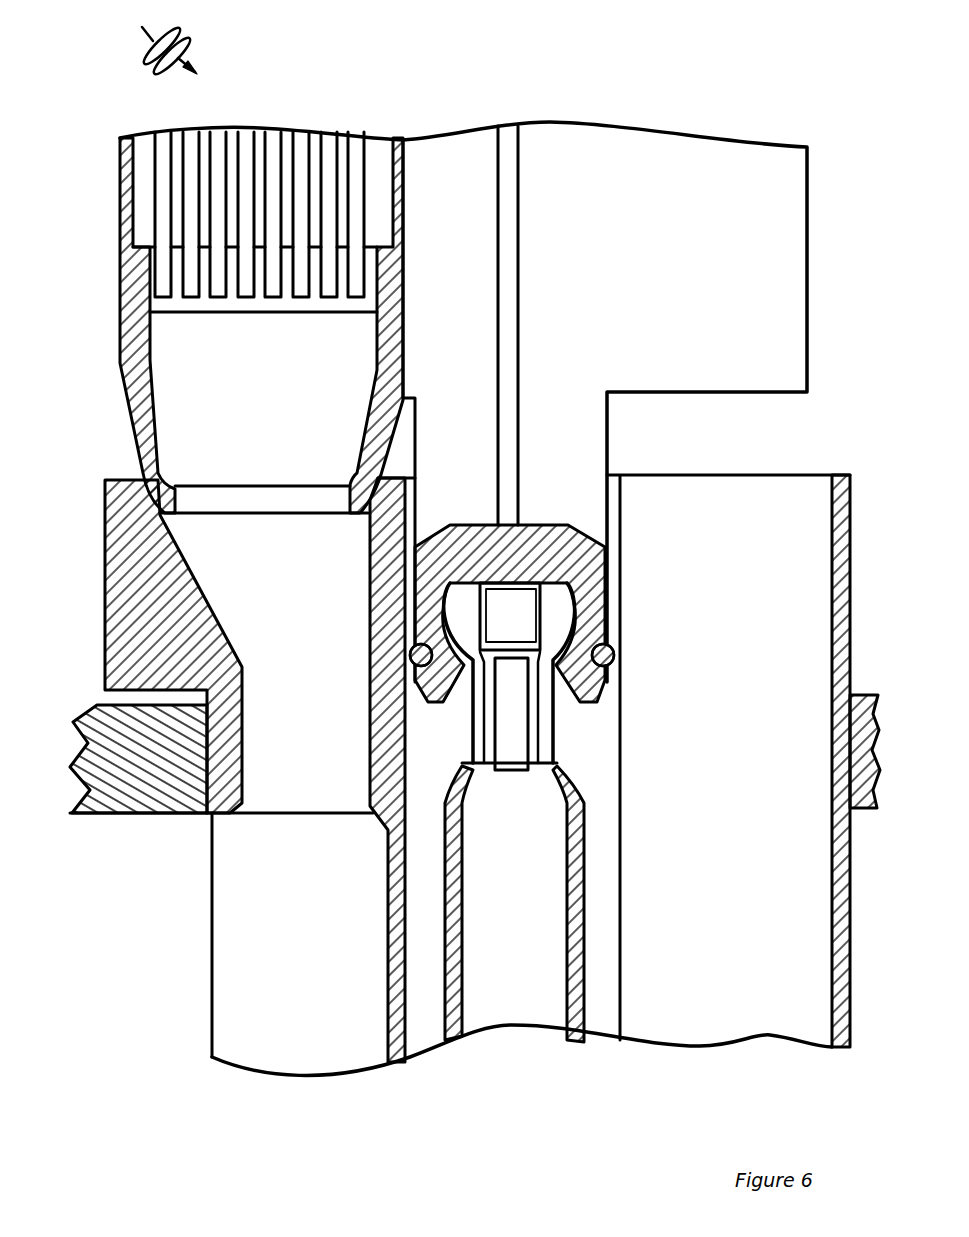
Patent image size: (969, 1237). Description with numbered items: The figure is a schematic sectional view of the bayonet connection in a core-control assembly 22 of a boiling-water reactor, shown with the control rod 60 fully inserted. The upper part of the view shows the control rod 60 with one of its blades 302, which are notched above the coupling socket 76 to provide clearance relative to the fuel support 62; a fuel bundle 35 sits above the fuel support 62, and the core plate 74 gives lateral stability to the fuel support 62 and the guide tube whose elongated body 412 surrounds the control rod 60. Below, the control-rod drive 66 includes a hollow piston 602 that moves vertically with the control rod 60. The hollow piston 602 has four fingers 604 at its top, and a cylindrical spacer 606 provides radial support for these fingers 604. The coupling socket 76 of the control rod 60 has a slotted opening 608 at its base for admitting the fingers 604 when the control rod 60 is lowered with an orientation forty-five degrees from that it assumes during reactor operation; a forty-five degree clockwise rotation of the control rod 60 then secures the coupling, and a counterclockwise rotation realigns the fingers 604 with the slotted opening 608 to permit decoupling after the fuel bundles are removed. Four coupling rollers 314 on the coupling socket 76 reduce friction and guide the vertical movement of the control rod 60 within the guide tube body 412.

The core-control assembly 22 is at (157, 41).
The fuel bundle 35 is at (116, 350).
The control rod 60 is at (645, 144).
The blade 302 is at (463, 187).
The fuel support 62 is at (128, 605).
The core plate 74 is at (151, 757).
The control-rod drive 66 is at (468, 1079).
The elongated body 412 is at (837, 1008).
The coupling socket 76 is at (600, 590).
The slotted opening 608 is at (462, 683).
The coupling roller 314 is at (620, 657).
The cylindrical spacer 606 is at (528, 624).
The finger 604 is at (550, 720).
The hollow piston 602 is at (573, 910).